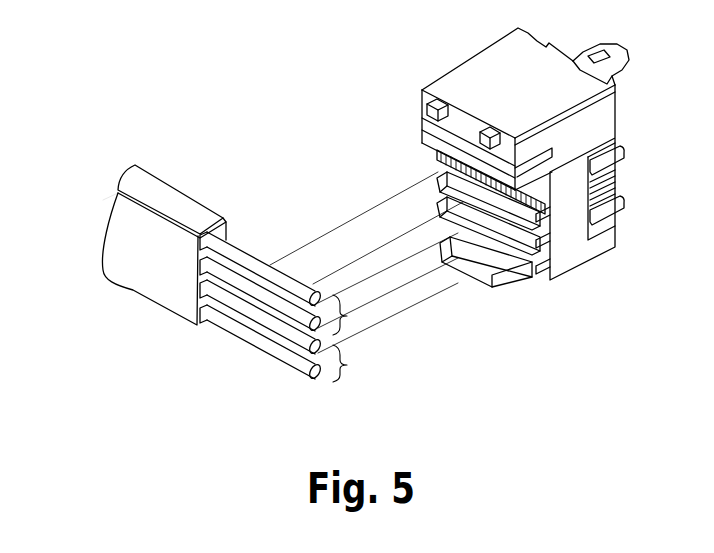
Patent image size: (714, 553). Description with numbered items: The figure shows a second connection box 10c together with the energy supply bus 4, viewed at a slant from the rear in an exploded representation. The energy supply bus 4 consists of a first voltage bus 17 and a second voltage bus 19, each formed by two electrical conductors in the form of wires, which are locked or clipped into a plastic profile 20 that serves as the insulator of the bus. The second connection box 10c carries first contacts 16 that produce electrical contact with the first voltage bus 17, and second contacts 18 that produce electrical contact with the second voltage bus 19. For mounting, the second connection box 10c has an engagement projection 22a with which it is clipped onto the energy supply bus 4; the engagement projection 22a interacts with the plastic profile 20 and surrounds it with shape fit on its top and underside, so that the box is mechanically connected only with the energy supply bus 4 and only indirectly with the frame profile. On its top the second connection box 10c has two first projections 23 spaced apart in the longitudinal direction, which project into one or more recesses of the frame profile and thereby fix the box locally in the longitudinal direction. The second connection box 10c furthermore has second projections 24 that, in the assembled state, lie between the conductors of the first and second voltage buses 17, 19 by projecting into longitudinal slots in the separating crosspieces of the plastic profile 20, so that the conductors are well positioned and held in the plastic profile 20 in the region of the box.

The energy supply bus 4 is at (100, 218).
The second connection box 10c is at (517, 57).
The first contacts 16 is at (460, 170).
The first voltage bus 17 is at (355, 322).
The second contacts 18 is at (465, 227).
The second voltage bus 19 is at (355, 363).
The plastic profile 20 is at (135, 180).
The engagement projection 22a is at (498, 270).
The first projections 23 is at (437, 100).
The second projections 24 is at (533, 248).